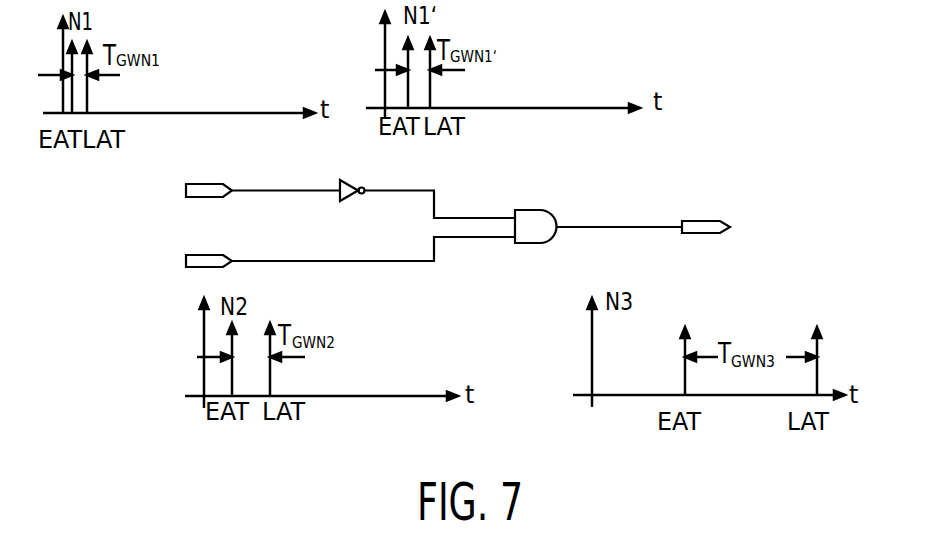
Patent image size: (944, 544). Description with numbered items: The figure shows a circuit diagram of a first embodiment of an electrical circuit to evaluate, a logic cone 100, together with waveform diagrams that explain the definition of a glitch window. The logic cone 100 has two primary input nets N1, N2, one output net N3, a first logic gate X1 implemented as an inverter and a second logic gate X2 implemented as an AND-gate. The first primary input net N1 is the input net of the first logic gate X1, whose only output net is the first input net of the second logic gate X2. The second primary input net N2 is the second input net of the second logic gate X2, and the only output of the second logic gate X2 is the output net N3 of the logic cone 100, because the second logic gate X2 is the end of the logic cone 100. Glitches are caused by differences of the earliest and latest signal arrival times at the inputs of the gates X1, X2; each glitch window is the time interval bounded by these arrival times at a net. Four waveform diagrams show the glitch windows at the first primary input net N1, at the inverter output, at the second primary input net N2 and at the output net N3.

The logic cone 100 is at (482, 182).
The first primary input net N1 is at (263, 171).
The second primary input net N2 is at (350, 243).
The output net N3 is at (644, 247).
The first logic gate X1 is at (422, 181).
The second logic gate X2 is at (536, 249).